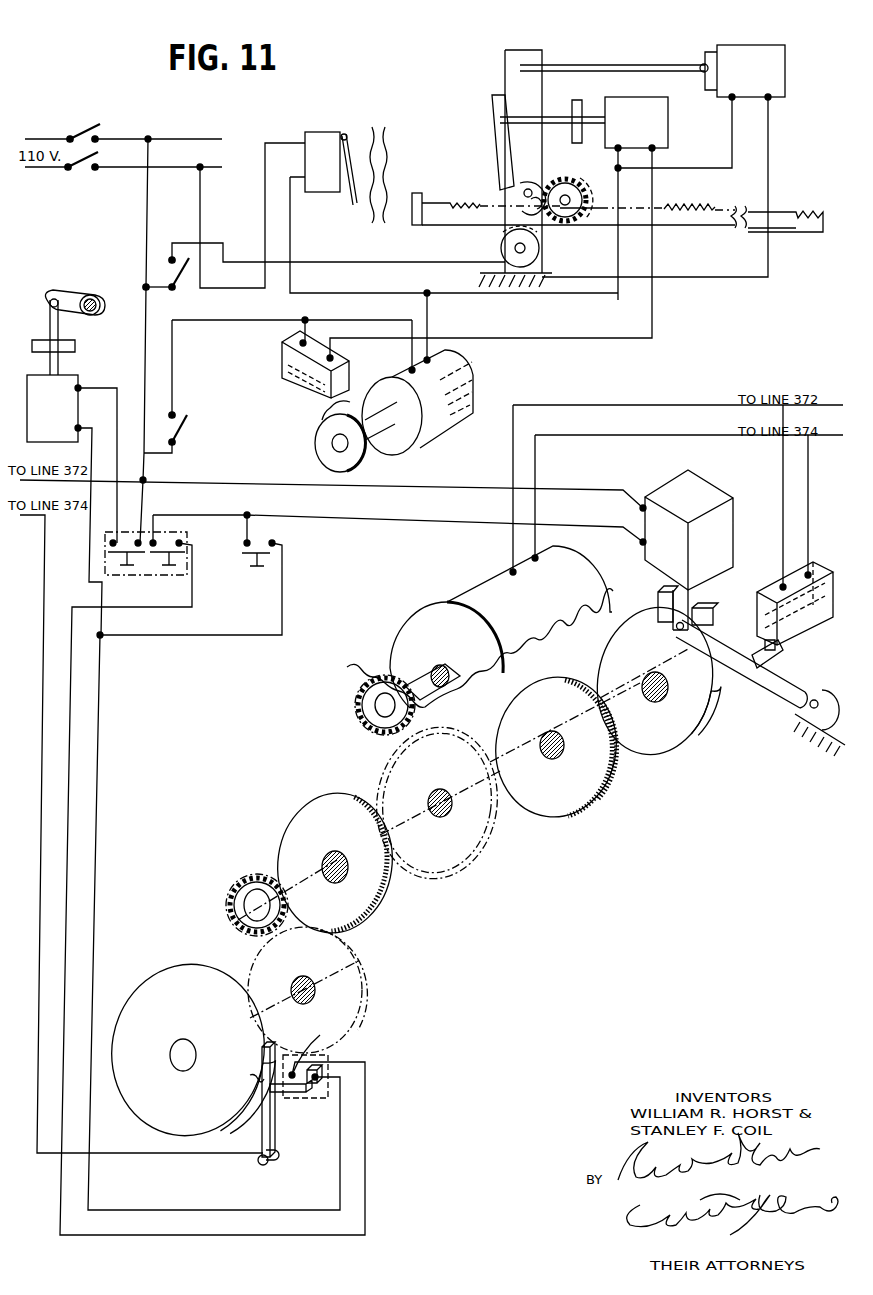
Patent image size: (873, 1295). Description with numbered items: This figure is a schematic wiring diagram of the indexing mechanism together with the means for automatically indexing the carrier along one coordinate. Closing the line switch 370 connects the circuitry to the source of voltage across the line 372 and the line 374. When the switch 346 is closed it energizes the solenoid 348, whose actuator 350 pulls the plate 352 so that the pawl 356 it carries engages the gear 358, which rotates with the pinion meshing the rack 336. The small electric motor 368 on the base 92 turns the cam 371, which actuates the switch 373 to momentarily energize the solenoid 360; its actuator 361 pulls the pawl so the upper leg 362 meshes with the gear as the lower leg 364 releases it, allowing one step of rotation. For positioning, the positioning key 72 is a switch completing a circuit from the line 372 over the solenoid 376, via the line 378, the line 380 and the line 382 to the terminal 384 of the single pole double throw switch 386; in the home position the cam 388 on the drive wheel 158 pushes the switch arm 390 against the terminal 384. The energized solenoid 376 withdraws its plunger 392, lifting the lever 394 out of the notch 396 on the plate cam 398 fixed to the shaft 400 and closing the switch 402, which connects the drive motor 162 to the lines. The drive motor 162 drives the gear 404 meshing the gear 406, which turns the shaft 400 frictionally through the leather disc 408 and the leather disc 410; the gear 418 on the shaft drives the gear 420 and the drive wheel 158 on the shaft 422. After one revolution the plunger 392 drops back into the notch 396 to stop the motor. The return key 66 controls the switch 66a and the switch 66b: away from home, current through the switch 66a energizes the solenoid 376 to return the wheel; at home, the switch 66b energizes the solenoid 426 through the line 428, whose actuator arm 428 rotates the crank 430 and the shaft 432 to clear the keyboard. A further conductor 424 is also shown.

The line switch 370 is at (88, 126).
The line 372 is at (109, 139).
The line 374 is at (124, 167).
The switch 346 is at (182, 284).
The crank 430 is at (68, 288).
The shaft 432 is at (90, 295).
The actuator arm 428 is at (68, 344).
The solenoid 426 is at (70, 384).
The switch 373 is at (290, 378).
The cam 371 is at (323, 428).
The electric motor 368 is at (454, 372).
The plate 352 is at (503, 65).
The actuator 350 is at (660, 66).
The solenoid 348 is at (785, 65).
The actuator 361 is at (578, 116).
The solenoid 360 is at (650, 106).
The pawl 356 is at (499, 150).
The upper leg 362 is at (534, 168).
The gear 358 is at (570, 178).
The lower leg 364 is at (544, 236).
The rack 336 is at (806, 231).
The solenoid 376 is at (702, 488).
The plunger 392 is at (698, 592).
The switch 402 is at (780, 590).
The notch 396 is at (655, 628).
The lever 394 is at (702, 650).
The plate cam 398 is at (690, 740).
The shaft 400 is at (614, 748).
The base 92 is at (824, 747).
The line 378 is at (388, 524).
The drive motor 162 is at (452, 590).
The gear 404 is at (359, 684).
The leather disc 408 is at (564, 812).
The gear 406 is at (417, 866).
The leather disc 410 is at (342, 926).
The gear 418 is at (240, 900).
The gear 420 is at (344, 998).
The shaft 422 is at (322, 1032).
The drive wheel 158 is at (143, 992).
The cam 388 is at (250, 1074).
The terminal 384 is at (329, 1064).
The single pole double throw switch 386 is at (316, 1098).
The switch arm 390 is at (270, 1135).
The conductor 424 is at (367, 1119).
The line 382 is at (97, 880).
The line 380 is at (192, 636).
The return key 66 is at (178, 538).
The switch 66b is at (130, 566).
The switch 66a is at (172, 566).
The positioning key 72 is at (270, 560).